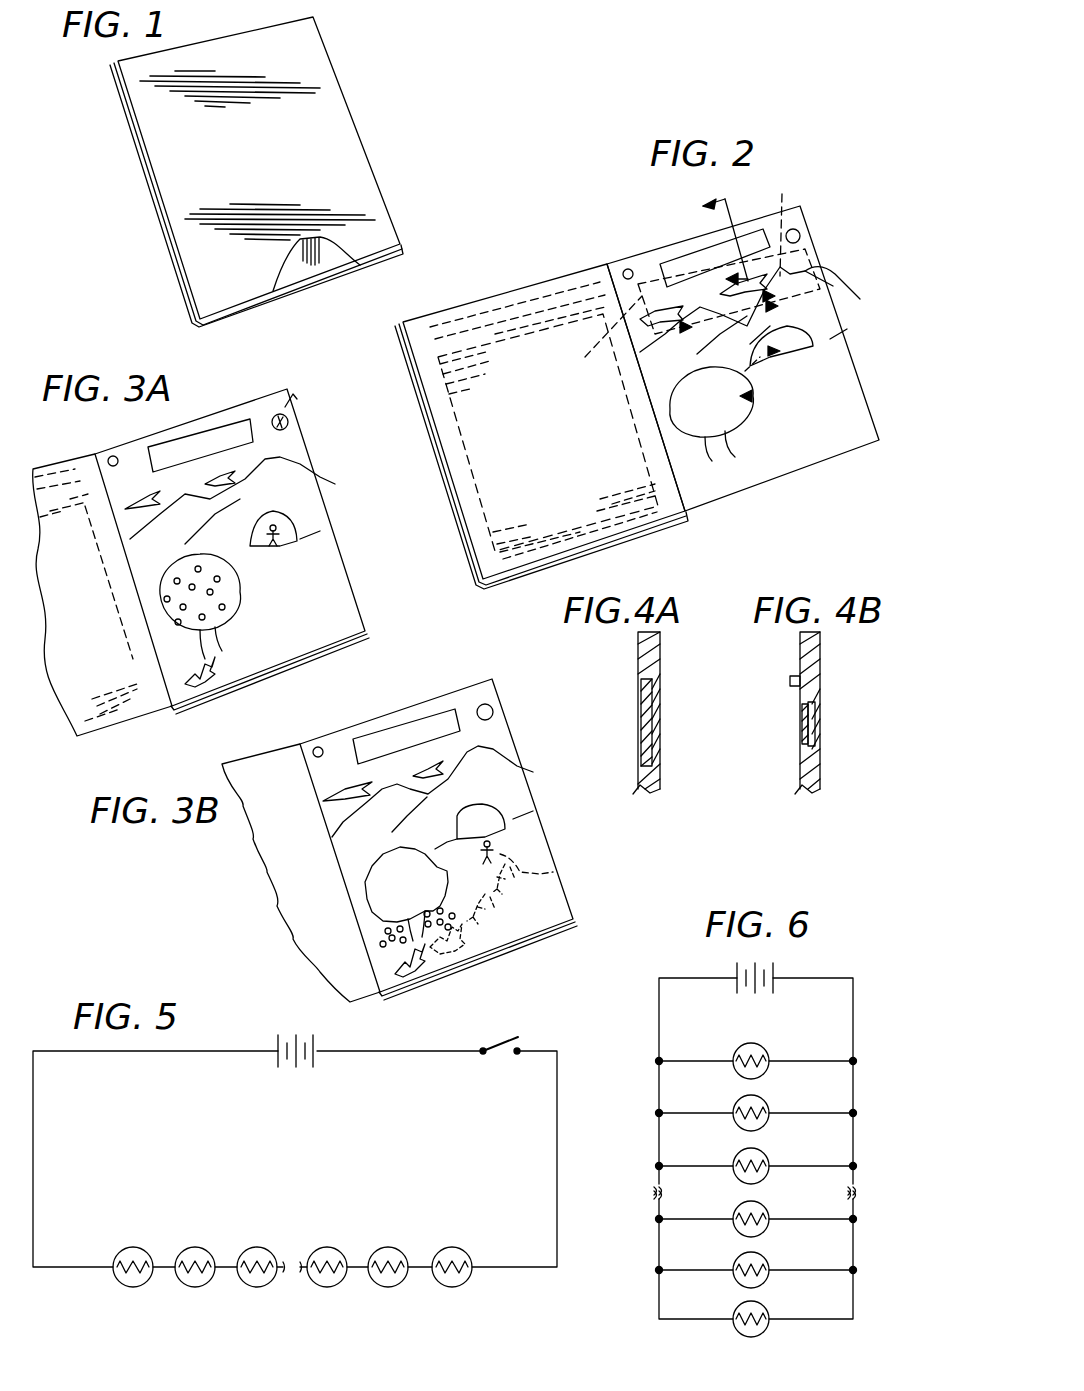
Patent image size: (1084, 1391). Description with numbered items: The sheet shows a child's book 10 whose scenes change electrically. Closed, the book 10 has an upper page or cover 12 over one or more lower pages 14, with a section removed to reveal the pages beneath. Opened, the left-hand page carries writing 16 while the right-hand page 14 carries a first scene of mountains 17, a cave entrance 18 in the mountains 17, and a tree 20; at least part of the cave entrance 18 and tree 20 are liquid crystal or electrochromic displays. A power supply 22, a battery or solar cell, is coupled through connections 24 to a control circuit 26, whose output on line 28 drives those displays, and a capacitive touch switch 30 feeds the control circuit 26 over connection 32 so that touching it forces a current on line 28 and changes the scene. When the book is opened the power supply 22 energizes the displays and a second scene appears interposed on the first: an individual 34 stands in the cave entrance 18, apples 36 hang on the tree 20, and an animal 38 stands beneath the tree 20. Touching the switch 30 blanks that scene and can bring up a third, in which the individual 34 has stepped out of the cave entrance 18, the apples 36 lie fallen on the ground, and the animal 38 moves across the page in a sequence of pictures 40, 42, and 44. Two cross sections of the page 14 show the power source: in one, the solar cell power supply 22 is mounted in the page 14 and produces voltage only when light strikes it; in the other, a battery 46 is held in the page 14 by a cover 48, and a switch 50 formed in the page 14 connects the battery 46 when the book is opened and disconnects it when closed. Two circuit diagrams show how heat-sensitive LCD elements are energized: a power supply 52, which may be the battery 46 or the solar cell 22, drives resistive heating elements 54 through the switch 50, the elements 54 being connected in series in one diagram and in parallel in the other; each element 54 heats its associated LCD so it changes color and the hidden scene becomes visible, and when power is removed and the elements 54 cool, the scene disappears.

In FIG. 1, the book 10 is at (372, 165).
In FIG. 2, the book 10 is at (568, 276).
In FIG. 1, the upper page or cover 12 is at (372, 210).
In FIG. 1, the lower page 14 is at (315, 265).
In FIG. 2, the lower page 14 is at (857, 396).
In FIG. 3A, the lower page 14 is at (201, 562).
In FIG. 3B, the lower page 14 is at (399, 840).
In FIG. 4A, the lower page 14 is at (662, 665).
In FIG. 4B, the lower page 14 is at (822, 665).
In FIG. 2, the writing 16 is at (502, 320).
In FIG. 2, the mountains 17 is at (835, 282).
In FIG. 2, the cave entrance 18 is at (815, 340).
In FIG. 3A, the cave entrance 18 is at (290, 530).
In FIG. 3B, the cave entrance 18 is at (490, 810).
In FIG. 2, the tree 20 is at (736, 423).
In FIG. 3A, the tree 20 is at (165, 585).
In FIG. 3B, the tree 20 is at (375, 875).
In FIG. 2, the power supply 22 is at (667, 262).
In FIG. 3A, the power supply 22 is at (222, 430).
In FIG. 3B, the power supply 22 is at (440, 710).
In FIG. 4A, the power supply 22 is at (640, 705).
In FIG. 2, the connections 24 is at (674, 273).
In FIG. 2, the control circuit 26 is at (700, 345).
In FIG. 2, the line 28 is at (720, 368).
In FIG. 2, the switch 30 is at (800, 237).
In FIG. 3A, the switch 30 is at (288, 426).
In FIG. 3B, the switch 30 is at (492, 712).
In FIG. 2, the connection 32 is at (805, 250).
In FIG. 3A, the figure 34 is at (282, 548).
In FIG. 3B, the figure 34 is at (495, 848).
In FIG. 3A, the apples 36 is at (225, 608).
In FIG. 3B, the apples 36 is at (385, 940).
In FIG. 3A, the animal 38 is at (208, 682).
In FIG. 3B, the animal 38 is at (420, 960).
In FIG. 3B, the picture 40 is at (463, 947).
In FIG. 3B, the picture 42 is at (500, 905).
In FIG. 3B, the picture 44 is at (556, 872).
In FIG. 4B, the battery 46 is at (815, 725).
In FIG. 4B, the cover 48 is at (805, 738).
In FIG. 4B, the switch 50 is at (790, 680).
In FIG. 5, the switch 50 is at (508, 1037).
In FIG. 5, the power supply 52 is at (305, 1068).
In FIG. 6, the power supply 52 is at (762, 968).
In FIG. 5, the resistive heating element 54 is at (185, 1249).
In FIG. 6, the resistive heating element 54 is at (768, 1106).